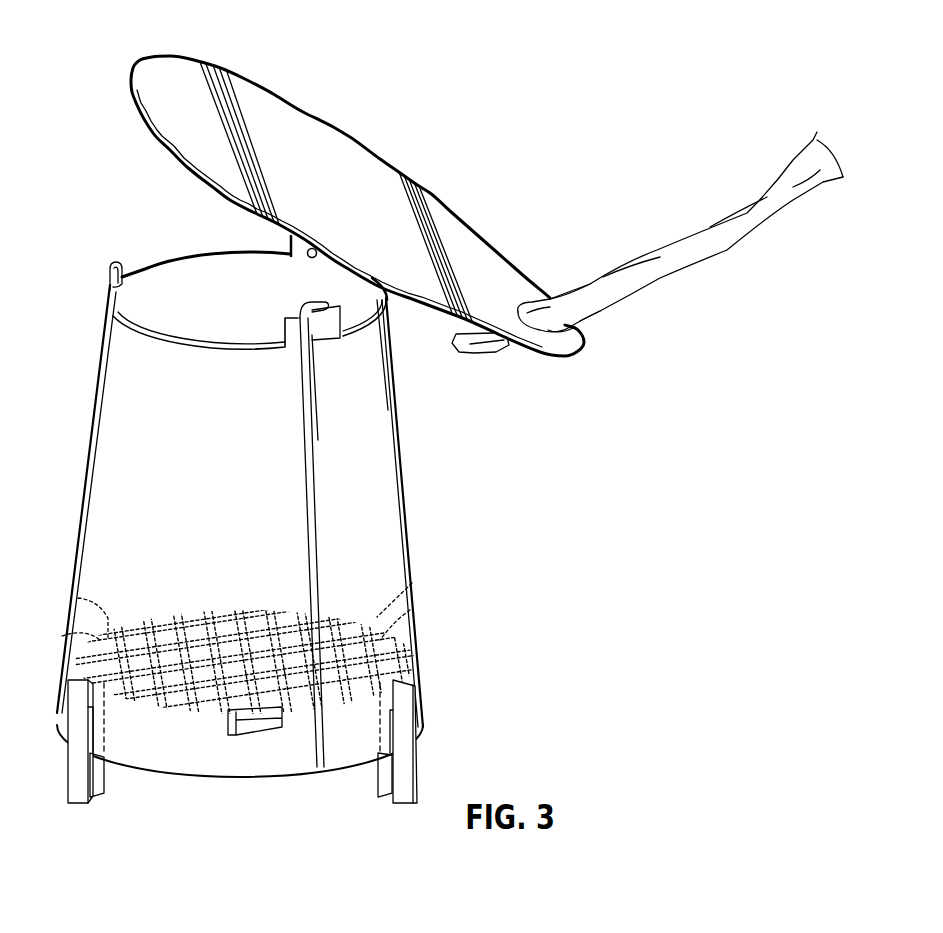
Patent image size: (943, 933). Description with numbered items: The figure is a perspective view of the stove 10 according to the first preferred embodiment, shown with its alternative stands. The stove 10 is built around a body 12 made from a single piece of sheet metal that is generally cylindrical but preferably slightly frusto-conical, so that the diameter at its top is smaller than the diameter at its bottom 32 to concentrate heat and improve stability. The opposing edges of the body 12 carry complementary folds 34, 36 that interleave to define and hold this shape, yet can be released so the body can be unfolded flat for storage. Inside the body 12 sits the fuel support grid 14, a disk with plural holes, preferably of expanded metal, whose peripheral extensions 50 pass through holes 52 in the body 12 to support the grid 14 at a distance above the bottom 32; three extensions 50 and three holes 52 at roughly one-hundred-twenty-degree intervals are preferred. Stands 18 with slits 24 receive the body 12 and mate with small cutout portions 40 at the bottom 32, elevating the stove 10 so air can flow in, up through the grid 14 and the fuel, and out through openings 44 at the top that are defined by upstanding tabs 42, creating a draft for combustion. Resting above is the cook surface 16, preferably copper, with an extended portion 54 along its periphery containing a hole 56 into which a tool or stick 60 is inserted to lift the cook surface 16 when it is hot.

The stove 10 is at (477, 487).
The body 12 is at (85, 512).
The fuel support grid 14 is at (411, 640).
The cook surface 16 is at (472, 256).
The stands 18 is at (84, 749).
The slits 24 is at (93, 770).
The bottom 32 is at (163, 774).
The fold 34 is at (314, 338).
The fold 36 is at (300, 303).
The cutout portions 40 is at (92, 718).
The upstanding tabs 42 is at (114, 278).
The openings 44 is at (162, 257).
The extensions 50 is at (78, 598).
The holes 52 is at (80, 633).
The extended portion 54 is at (545, 350).
The hole 56 is at (573, 325).
The tool or stick 60 is at (717, 248).